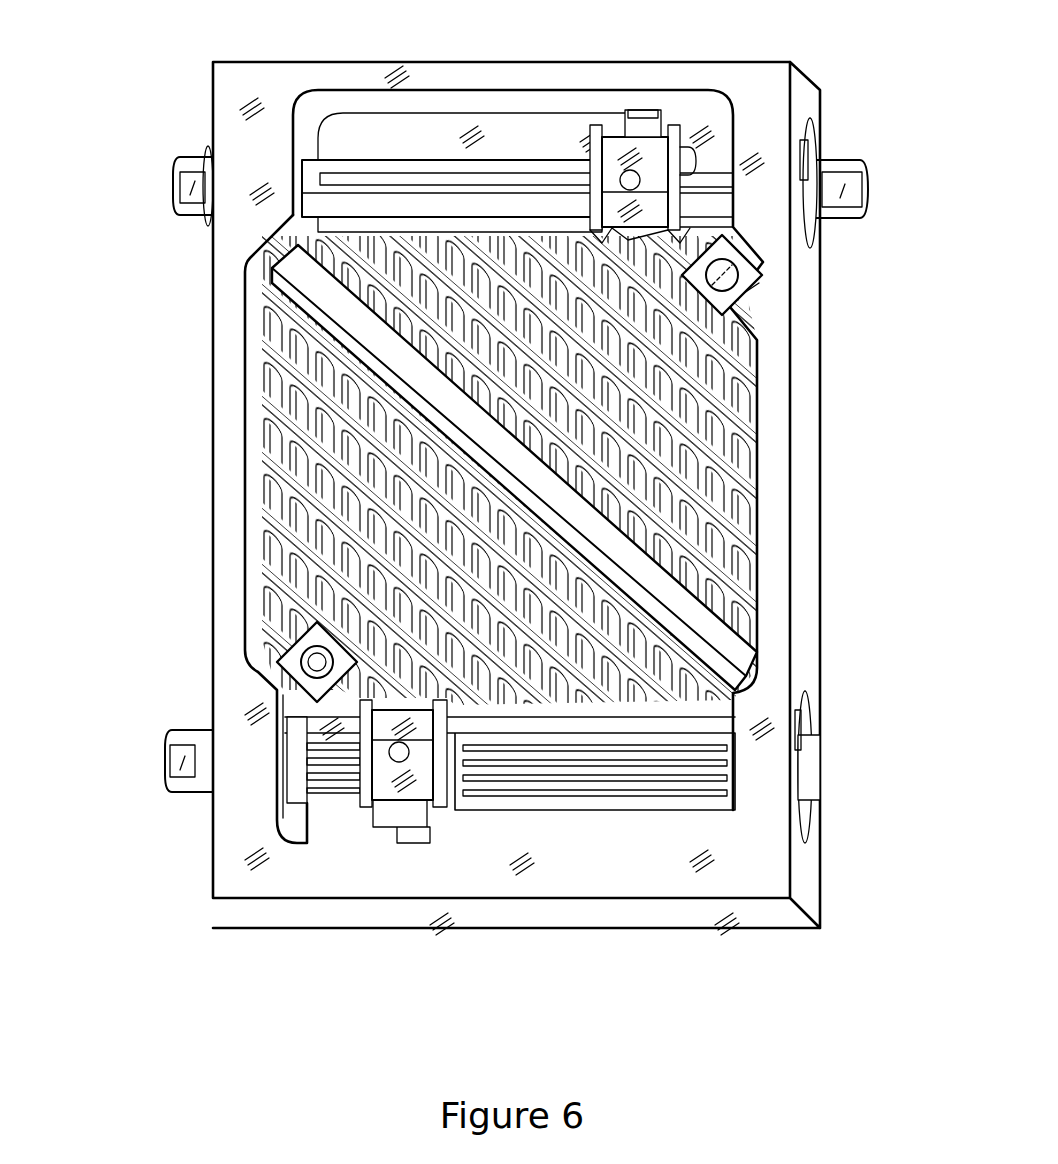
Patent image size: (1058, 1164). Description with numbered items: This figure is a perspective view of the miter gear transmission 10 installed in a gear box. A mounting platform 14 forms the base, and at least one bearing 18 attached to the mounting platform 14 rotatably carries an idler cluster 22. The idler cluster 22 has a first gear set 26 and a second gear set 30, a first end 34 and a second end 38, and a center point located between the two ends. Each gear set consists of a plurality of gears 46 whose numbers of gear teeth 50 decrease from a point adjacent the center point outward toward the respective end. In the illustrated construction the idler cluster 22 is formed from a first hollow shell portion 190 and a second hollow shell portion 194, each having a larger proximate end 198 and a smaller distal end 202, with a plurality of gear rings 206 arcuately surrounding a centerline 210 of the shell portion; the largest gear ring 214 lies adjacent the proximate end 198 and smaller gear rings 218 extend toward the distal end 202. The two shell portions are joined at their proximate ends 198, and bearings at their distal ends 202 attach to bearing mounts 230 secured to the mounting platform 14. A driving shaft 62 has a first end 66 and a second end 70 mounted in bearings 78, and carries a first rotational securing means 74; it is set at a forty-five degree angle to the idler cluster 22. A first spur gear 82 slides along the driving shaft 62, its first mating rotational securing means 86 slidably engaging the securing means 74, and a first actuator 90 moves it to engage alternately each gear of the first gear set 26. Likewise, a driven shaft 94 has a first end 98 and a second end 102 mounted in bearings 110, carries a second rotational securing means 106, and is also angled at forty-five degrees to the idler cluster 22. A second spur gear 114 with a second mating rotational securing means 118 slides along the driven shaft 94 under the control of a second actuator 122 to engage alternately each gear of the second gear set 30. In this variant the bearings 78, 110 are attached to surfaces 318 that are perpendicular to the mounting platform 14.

The miter gear transmission 10 is at (829, 54).
The mounting platform 14 is at (812, 315).
The bearing 18 is at (748, 295).
The idler cluster 22 is at (748, 440).
The first gear set 26 is at (290, 470).
The second gear set 30 is at (745, 475).
The first end 34 is at (255, 592).
The second end 38 is at (740, 332).
The gears 46 is at (290, 425).
The gear teeth 50 is at (290, 385).
The driving shaft 62 is at (456, 168).
The first end 66 is at (188, 183).
The second end 70 is at (870, 190).
The first rotational securing means 74 is at (368, 168).
The bearings 78 is at (812, 140).
The first spur gear 82 is at (645, 112).
The first mating rotational securing means 86 is at (700, 185).
The first actuator 90 is at (603, 133).
The driven shaft 94 is at (660, 795).
The first end 98 is at (183, 765).
The second end 102 is at (815, 765).
The second rotational securing means 106 is at (627, 795).
The bearings 110 is at (812, 800).
The second spur gear 114 is at (420, 830).
The second mating rotational securing means 118 is at (455, 800).
The second actuator 122 is at (383, 815).
The first hollow shell portion 190 is at (278, 322).
The second hollow shell portion 194 is at (745, 385).
The proximate end 198 is at (760, 660).
The distal end 202 is at (752, 316).
The gear rings 206 is at (290, 510).
The centerline 210 is at (752, 275).
The largest gear ring 214 is at (742, 625).
The smaller gear rings 218 is at (248, 570).
The bearing mounts 230 is at (272, 625).
The surfaces 318 is at (812, 872).